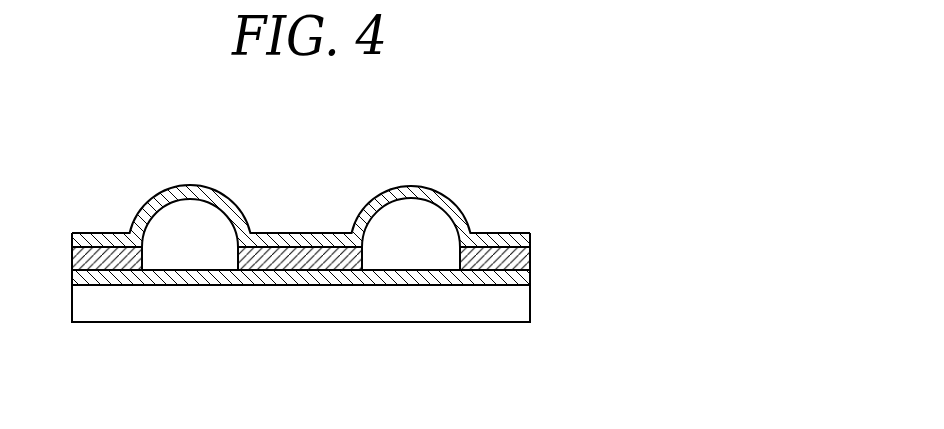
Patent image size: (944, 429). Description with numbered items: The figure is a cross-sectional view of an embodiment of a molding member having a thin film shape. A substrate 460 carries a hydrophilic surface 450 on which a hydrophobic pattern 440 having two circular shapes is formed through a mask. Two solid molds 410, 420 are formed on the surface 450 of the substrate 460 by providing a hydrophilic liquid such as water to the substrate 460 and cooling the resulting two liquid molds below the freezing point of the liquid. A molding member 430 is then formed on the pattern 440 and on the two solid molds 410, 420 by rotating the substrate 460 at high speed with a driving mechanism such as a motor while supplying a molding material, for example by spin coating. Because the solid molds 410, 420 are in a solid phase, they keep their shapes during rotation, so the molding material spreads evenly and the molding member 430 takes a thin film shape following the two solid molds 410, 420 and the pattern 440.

The solid mold 410 is at (198, 218).
The solid mold 420 is at (418, 218).
The molding member 430 is at (525, 237).
The pattern 440 is at (525, 255).
The surface 450 is at (525, 282).
The substrate 460 is at (522, 303).